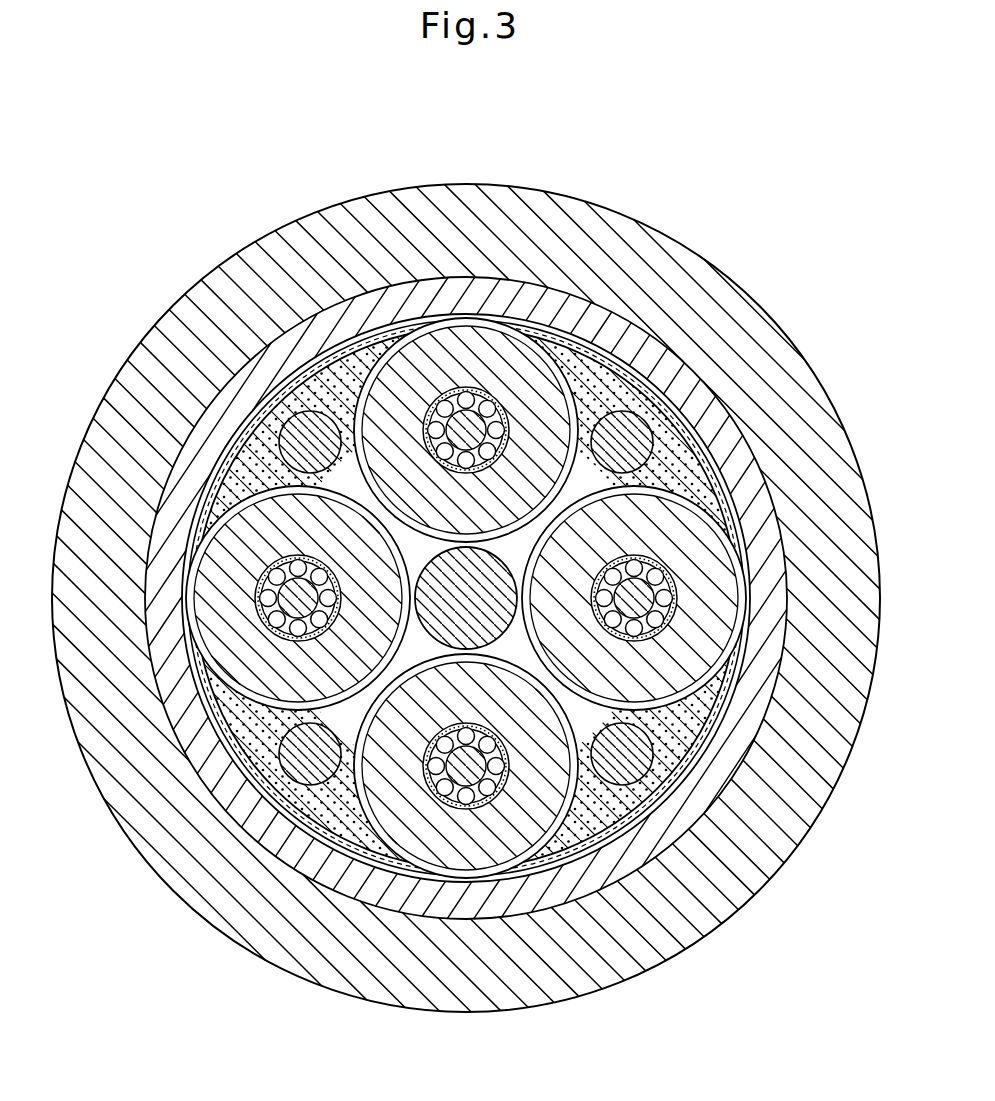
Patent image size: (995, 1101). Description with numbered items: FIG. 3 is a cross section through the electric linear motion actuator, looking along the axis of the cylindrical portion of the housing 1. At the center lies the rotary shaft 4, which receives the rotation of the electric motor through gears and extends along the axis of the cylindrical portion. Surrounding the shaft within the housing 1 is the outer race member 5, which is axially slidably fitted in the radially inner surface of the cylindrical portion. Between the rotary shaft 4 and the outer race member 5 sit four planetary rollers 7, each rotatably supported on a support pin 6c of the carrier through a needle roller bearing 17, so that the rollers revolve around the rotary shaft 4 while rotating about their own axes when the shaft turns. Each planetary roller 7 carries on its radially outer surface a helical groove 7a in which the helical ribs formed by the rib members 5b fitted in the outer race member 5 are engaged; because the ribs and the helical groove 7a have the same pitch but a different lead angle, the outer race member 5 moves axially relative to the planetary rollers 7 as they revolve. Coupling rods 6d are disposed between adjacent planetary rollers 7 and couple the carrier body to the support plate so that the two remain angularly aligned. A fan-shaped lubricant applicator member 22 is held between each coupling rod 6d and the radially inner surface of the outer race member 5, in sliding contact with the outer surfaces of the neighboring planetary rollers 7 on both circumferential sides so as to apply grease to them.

The housing 1 is at (800, 346).
The rotary shaft 4 is at (517, 565).
The outer race member 5 is at (722, 405).
The rib member 5b is at (583, 333).
The support pin 6c is at (400, 362).
The coupling rod 6d is at (312, 440).
The planetary roller 7 is at (473, 347).
The helical groove 7a is at (548, 322).
The needle roller bearing 17 is at (460, 395).
The lubricant applicator member 22 is at (612, 350).